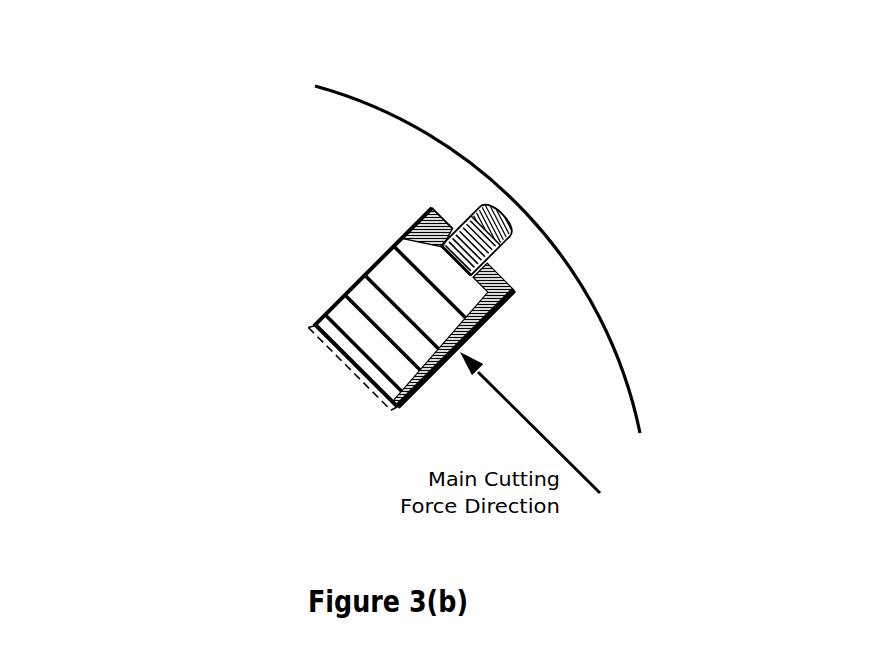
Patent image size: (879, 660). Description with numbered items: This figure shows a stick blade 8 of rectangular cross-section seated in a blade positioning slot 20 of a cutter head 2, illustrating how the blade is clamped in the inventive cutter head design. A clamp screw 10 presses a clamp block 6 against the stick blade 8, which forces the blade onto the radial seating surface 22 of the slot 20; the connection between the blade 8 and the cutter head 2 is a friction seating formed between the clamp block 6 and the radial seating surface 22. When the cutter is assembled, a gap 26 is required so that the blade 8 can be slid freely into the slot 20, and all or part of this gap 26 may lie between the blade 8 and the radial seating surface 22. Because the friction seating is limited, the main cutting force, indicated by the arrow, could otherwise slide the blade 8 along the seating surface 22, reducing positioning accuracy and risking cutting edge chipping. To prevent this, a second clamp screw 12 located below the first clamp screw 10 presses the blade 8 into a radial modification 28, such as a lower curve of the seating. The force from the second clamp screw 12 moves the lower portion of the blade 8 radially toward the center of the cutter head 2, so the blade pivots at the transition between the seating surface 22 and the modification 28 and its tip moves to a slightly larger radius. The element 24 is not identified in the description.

The cutter head 2 is at (380, 148).
The clamp block 6 is at (500, 278).
The stick blade 8 is at (355, 312).
The clamp screw 10 is at (470, 222).
The second clamp screw 12 is at (500, 252).
The blade positioning slot 20 is at (412, 213).
The radial seating surface 22 is at (373, 380).
The front support layer 24 is at (378, 262).
The gap 26 is at (473, 338).
The radial modification 28 is at (327, 347).